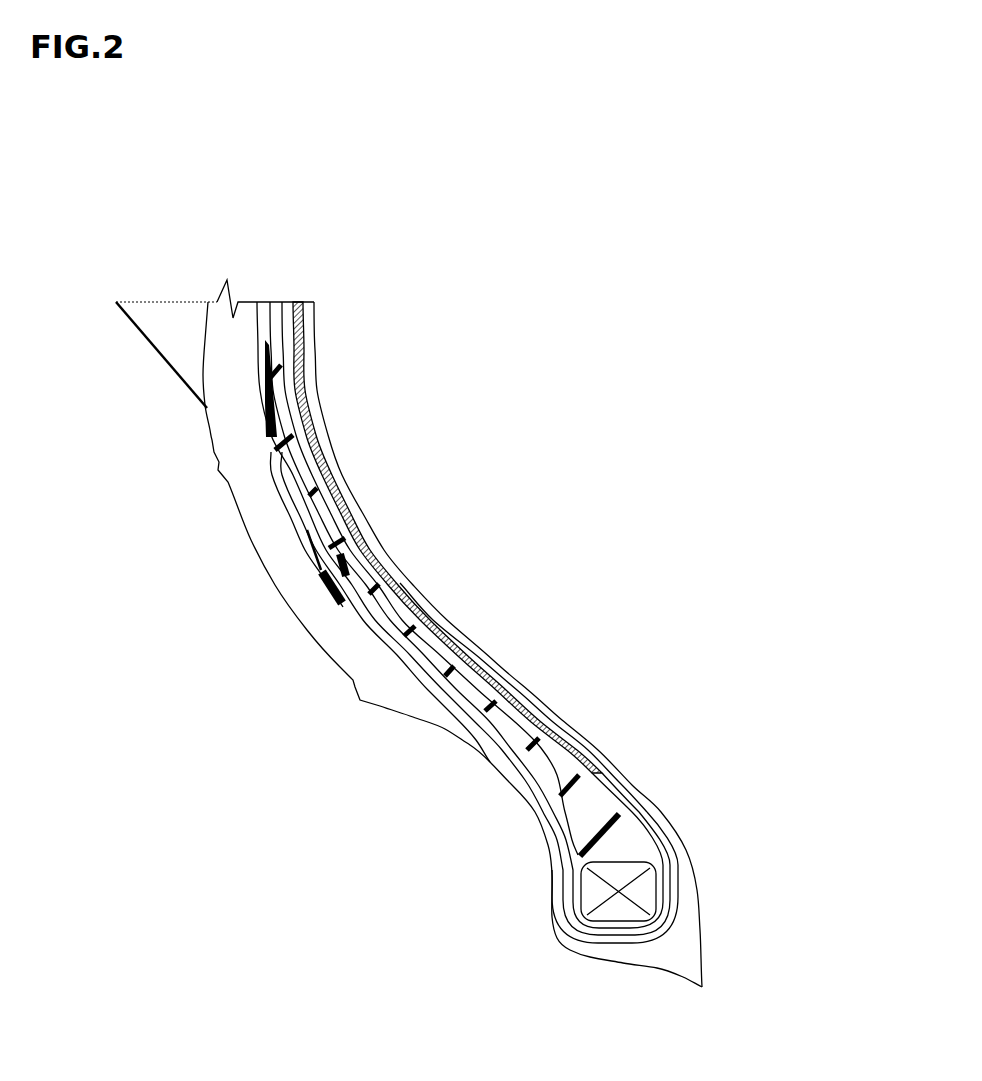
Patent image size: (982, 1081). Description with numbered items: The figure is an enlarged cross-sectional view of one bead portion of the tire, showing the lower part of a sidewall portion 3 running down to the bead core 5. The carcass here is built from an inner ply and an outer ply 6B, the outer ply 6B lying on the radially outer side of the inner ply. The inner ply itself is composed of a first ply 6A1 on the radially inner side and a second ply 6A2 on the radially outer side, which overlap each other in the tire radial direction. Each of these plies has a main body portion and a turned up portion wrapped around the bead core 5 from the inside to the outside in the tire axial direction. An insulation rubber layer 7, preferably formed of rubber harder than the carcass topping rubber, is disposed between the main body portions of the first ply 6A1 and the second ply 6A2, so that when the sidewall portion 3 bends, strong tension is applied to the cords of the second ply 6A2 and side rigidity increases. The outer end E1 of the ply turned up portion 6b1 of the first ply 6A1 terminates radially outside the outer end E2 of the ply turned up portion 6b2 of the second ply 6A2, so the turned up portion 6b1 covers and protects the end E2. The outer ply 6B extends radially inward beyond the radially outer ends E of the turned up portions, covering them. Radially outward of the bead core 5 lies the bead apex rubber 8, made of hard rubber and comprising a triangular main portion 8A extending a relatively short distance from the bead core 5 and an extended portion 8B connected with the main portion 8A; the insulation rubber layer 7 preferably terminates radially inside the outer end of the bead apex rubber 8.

The sidewall portion 3 is at (441, 404).
The bead core 5 is at (640, 890).
The first ply 6A1 is at (448, 632).
The second ply 6A2 is at (362, 558).
The outer ply 6B is at (253, 358).
The ply turned up portion of the first ply 6b1 is at (382, 635).
The ply turned up portion of the second ply 6b2 is at (485, 715).
The insulation rubber layer 7 is at (333, 490).
The bead apex rubber 8 is at (535, 672).
The main portion 8A is at (641, 809).
The extended portion 8B is at (467, 688).
The radially outer end of ply turned up portion E is at (210, 476).
The outer end of ply turned up portion of the first ply E1 is at (268, 403).
The outer end of ply turned up portion of the second ply E2 is at (323, 530).